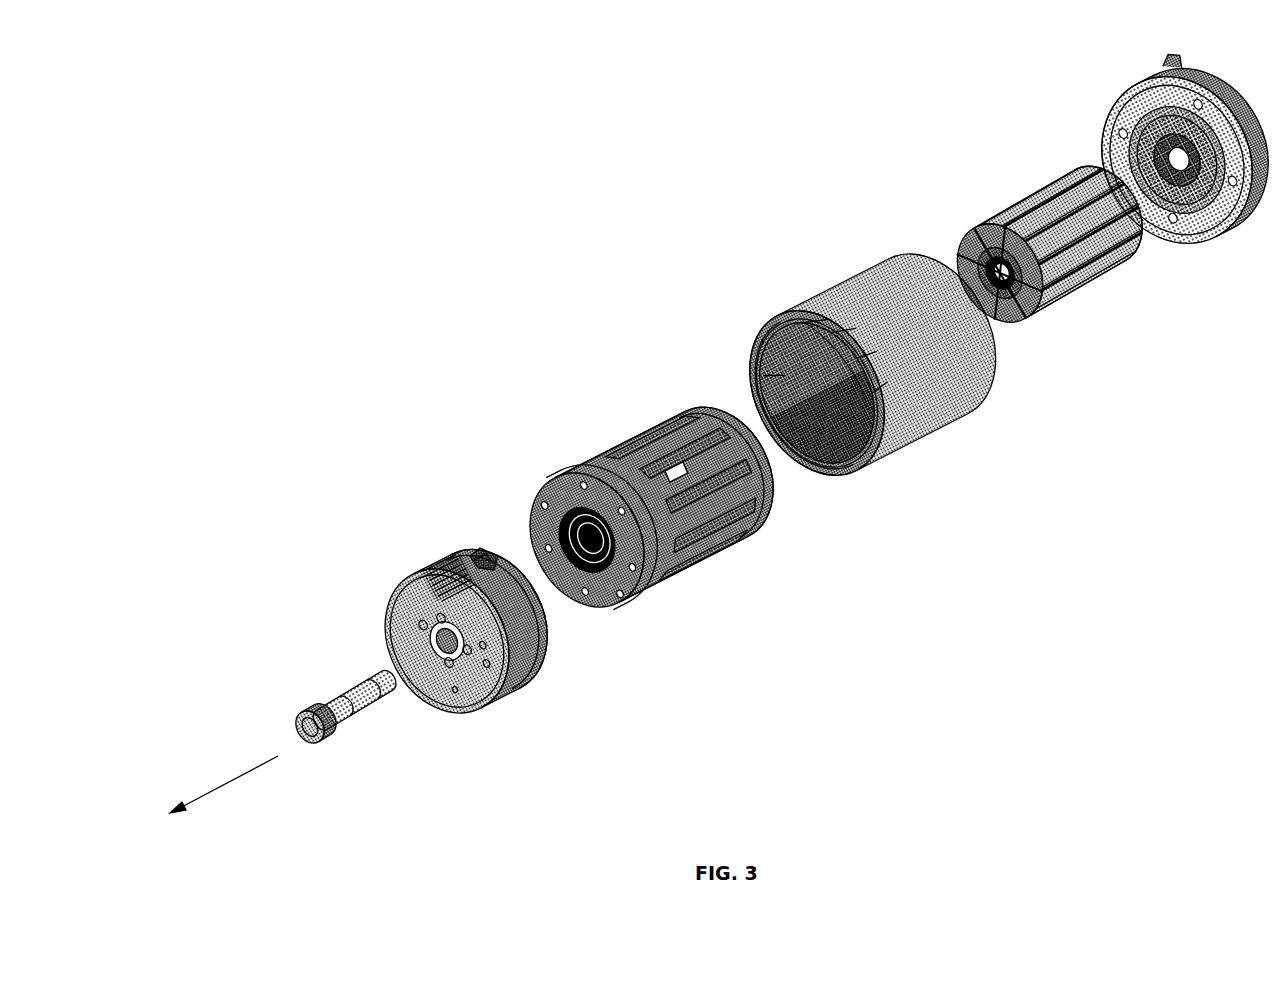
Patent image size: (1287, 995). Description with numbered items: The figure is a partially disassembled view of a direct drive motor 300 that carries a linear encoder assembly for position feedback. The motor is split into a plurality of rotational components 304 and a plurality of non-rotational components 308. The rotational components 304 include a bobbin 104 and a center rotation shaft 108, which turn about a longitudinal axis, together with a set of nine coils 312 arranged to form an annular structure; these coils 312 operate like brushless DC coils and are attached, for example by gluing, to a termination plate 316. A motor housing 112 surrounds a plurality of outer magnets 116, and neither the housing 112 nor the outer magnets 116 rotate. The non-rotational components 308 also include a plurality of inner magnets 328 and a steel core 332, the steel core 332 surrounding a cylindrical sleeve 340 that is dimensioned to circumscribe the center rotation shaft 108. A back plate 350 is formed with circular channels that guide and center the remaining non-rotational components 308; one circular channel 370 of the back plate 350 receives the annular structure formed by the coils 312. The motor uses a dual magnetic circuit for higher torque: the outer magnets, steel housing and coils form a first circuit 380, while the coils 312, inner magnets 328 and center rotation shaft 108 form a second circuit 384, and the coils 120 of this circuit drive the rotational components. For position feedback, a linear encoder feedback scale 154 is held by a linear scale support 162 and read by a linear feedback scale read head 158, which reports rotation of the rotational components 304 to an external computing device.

The direct drive motor 300 is at (342, 199).
The center rotation shaft 108 is at (343, 690).
The linear scale support 162 is at (468, 713).
The linear encoder feedback scale 154 is at (537, 647).
The linear feedback scale read head 158 is at (478, 549).
The bobbin 104 is at (627, 607).
The termination plate 316 is at (543, 487).
The coils 120 is at (767, 490).
The coils 312 is at (643, 427).
The first circuit 380 is at (712, 292).
The motor housing 112 is at (925, 435).
The outer magnets 116 is at (748, 358).
The non-rotational components 308 is at (1065, 57).
The inner magnets 328 is at (992, 212).
The steel core 332 is at (1027, 323).
The cylindrical sleeve 340 is at (998, 325).
The rotational components 304 is at (1105, 433).
The second circuit 384 is at (377, 767).
The back plate 350 is at (1207, 247).
The circular channel 370 is at (1103, 105).